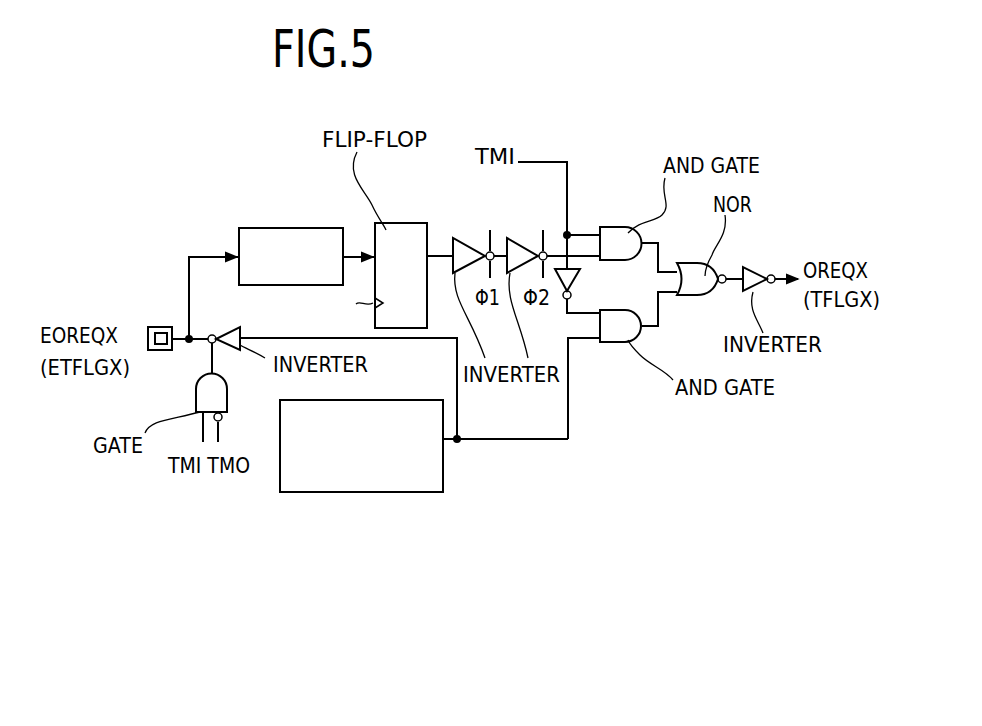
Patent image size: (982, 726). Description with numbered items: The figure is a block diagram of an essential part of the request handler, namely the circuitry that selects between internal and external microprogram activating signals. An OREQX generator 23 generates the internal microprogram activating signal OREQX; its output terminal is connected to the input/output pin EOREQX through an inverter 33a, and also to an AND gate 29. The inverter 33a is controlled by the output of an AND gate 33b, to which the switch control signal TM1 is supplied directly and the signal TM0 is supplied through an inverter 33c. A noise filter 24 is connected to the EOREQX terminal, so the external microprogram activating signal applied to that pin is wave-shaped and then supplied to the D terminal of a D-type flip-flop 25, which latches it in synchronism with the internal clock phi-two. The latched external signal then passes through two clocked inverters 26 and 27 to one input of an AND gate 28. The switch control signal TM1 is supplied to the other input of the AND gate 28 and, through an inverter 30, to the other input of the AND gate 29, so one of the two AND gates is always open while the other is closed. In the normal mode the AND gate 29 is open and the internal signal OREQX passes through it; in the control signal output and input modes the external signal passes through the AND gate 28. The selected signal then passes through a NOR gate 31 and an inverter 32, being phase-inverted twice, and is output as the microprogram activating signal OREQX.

The OREQX generator 23 is at (380, 492).
The noise filter 24 is at (303, 227).
The D-type flip-flop 25 is at (398, 223).
The clocked inverter 26 is at (471, 238).
The clocked inverter 27 is at (528, 238).
The AND gate 28 is at (613, 227).
The AND gate 29 is at (634, 342).
The inverter 30 is at (580, 283).
The NOR gate 31 is at (699, 263).
The inverter 32 is at (755, 266).
The inverter 33a is at (234, 328).
The AND gate 33b is at (196, 388).
The inverter 33c is at (250, 410).